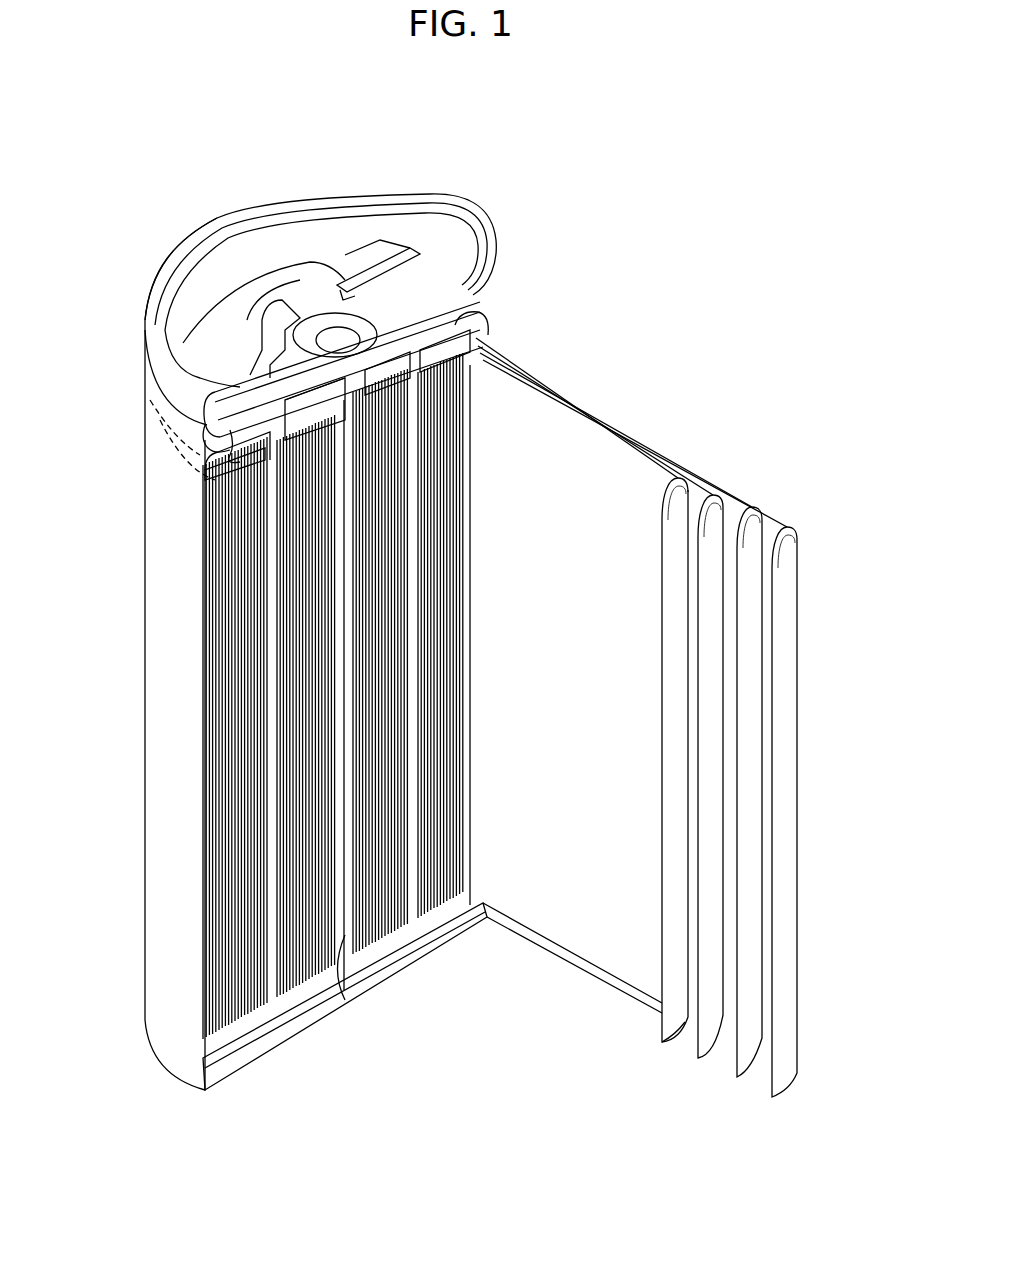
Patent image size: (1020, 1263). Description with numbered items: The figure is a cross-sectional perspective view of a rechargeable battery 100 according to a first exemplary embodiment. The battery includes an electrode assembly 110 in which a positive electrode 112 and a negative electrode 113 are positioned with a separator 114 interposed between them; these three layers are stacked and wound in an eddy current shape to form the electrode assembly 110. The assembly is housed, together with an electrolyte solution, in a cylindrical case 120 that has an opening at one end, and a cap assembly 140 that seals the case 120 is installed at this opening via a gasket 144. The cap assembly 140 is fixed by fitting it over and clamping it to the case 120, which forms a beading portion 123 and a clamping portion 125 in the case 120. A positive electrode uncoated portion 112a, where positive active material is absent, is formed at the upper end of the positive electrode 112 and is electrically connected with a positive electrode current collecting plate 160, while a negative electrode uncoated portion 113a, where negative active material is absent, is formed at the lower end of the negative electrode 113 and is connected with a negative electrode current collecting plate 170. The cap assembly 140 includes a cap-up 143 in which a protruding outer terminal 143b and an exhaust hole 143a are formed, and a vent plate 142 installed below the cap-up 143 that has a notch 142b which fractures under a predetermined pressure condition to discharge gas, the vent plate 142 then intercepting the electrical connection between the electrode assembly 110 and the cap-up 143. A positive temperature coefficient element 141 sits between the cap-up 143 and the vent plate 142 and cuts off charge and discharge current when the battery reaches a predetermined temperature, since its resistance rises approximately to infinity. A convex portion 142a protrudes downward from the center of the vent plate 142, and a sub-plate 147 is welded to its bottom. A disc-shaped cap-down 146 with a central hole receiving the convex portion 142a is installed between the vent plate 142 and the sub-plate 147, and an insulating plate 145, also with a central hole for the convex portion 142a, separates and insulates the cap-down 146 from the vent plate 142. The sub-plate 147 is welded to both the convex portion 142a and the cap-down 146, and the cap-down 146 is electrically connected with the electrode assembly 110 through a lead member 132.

The rechargeable battery 100 is at (426, 96).
The electrode assembly 110 is at (347, 935).
The positive electrode 112 is at (745, 1075).
The positive electrode uncoated portion 112a is at (730, 500).
The negative electrode 113 is at (662, 1027).
The negative electrode uncoated portion 113a is at (672, 1042).
The separator 114 is at (713, 1045).
The case 120 is at (157, 572).
The beading portion 123 is at (215, 452).
The clamping portion 125 is at (205, 420).
The lead member 132 is at (240, 440).
The cap assembly 140 is at (592, 352).
The positive temperature coefficient element 141 is at (440, 212).
The vent plate 142 is at (440, 232).
The convex portion 142a is at (335, 340).
The notch 142b is at (395, 300).
The cap-up 143 is at (440, 192).
The exhaust hole 143a is at (220, 318).
The protruding outer terminal 143b is at (300, 275).
The gasket 144 is at (470, 290).
The insulating plate 145 is at (470, 302).
The cap-down 146 is at (465, 318).
The sub-plate 147 is at (480, 332).
The positive electrode current collecting plate 160 is at (225, 490).
The negative electrode current collecting plate 170 is at (277, 1018).